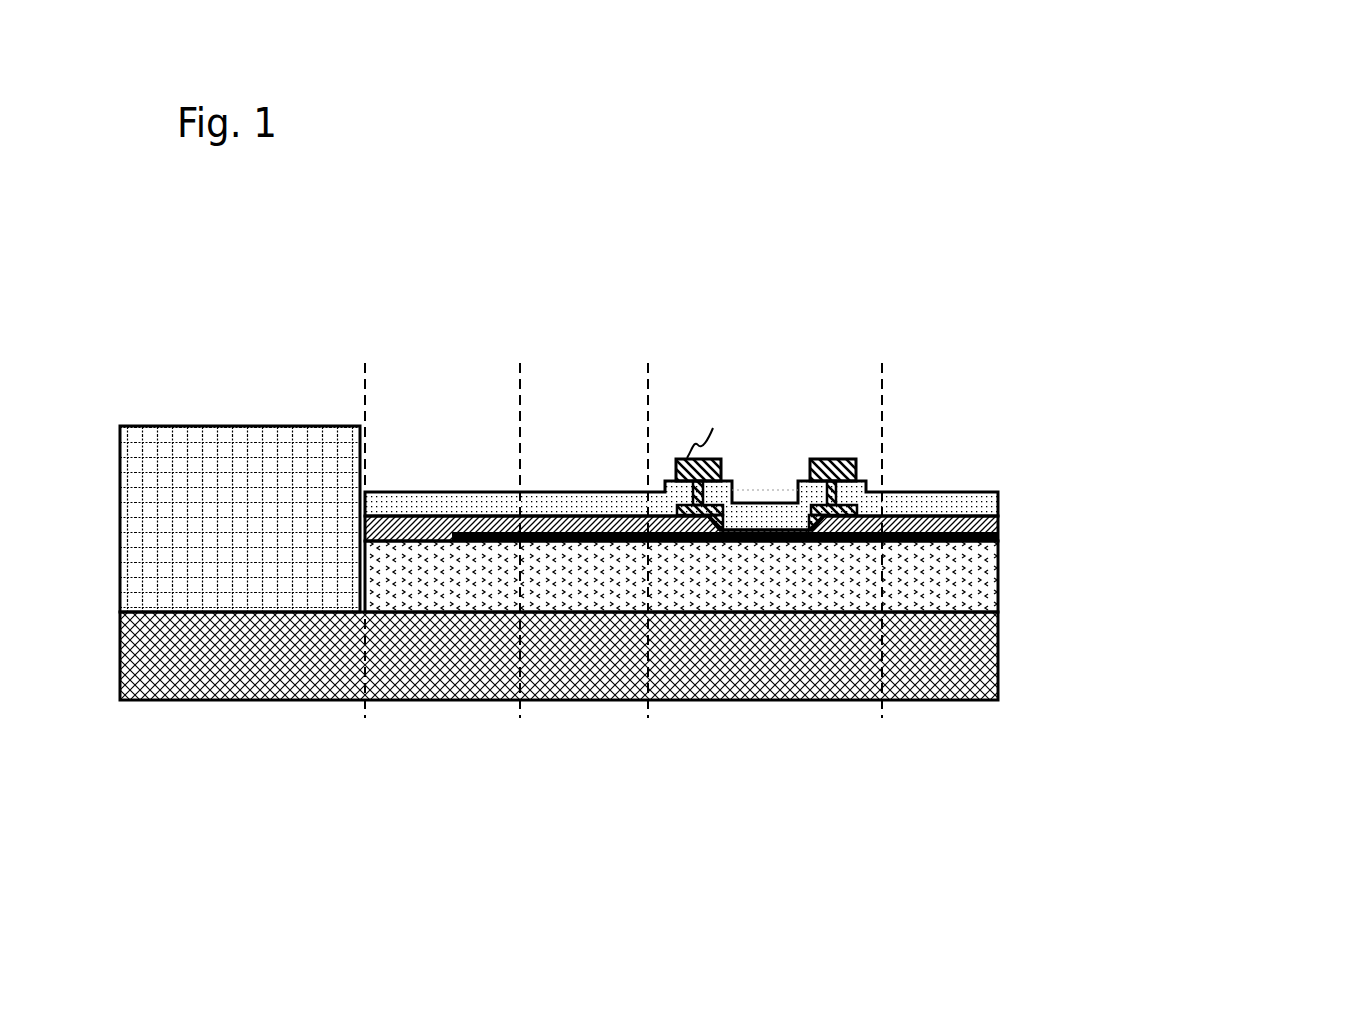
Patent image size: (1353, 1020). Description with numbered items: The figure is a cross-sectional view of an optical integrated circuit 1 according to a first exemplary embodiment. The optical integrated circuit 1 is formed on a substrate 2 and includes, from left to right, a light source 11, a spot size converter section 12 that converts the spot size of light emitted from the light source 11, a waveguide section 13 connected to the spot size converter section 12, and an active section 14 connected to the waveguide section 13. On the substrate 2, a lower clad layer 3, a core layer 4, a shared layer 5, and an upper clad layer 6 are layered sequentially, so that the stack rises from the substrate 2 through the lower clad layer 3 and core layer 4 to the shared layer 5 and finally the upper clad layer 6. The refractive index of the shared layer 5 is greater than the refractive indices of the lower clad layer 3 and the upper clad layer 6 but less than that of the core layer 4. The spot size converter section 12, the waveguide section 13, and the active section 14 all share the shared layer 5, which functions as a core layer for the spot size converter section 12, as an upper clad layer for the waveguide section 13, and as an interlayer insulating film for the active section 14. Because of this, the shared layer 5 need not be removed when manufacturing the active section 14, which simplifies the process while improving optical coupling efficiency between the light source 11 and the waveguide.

The optical integrated circuit 1 is at (708, 458).
The substrate 2 is at (998, 640).
The lower clad layer 3 is at (998, 580).
The core layer 4 is at (998, 537).
The shared layer 5 is at (998, 523).
The upper clad layer 6 is at (998, 492).
The light source 11 is at (256, 426).
The spot size converter section 12 is at (513, 357).
The waveguide section 13 is at (637, 357).
The active section 14 is at (872, 357).